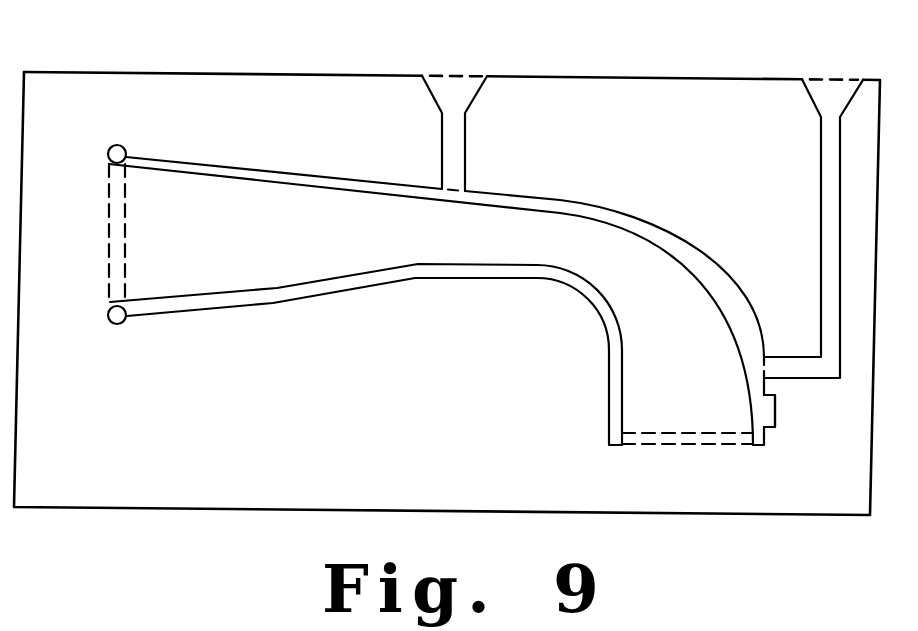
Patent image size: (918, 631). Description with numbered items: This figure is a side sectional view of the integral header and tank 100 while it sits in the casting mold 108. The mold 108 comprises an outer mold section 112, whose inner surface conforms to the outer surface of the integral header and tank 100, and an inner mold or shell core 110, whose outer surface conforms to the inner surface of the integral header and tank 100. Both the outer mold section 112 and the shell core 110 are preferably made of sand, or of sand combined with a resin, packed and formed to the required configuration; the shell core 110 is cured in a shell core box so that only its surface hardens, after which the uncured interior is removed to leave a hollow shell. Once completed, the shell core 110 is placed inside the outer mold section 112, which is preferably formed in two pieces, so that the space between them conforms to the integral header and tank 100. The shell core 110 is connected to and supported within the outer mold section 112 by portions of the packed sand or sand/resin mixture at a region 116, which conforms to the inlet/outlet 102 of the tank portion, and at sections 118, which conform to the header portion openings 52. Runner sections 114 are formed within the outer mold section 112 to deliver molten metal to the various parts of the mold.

The mold 108 is at (180, 63).
The outer mold section 112 is at (190, 146).
The integral header and tank 100 is at (630, 223).
The shell core 110 is at (328, 248).
The runner sections 114 is at (465, 152).
The region 116 is at (115, 233).
The inlet/outlet 102 is at (110, 297).
The sections 118 is at (668, 440).
The header portion openings 52 is at (747, 435).